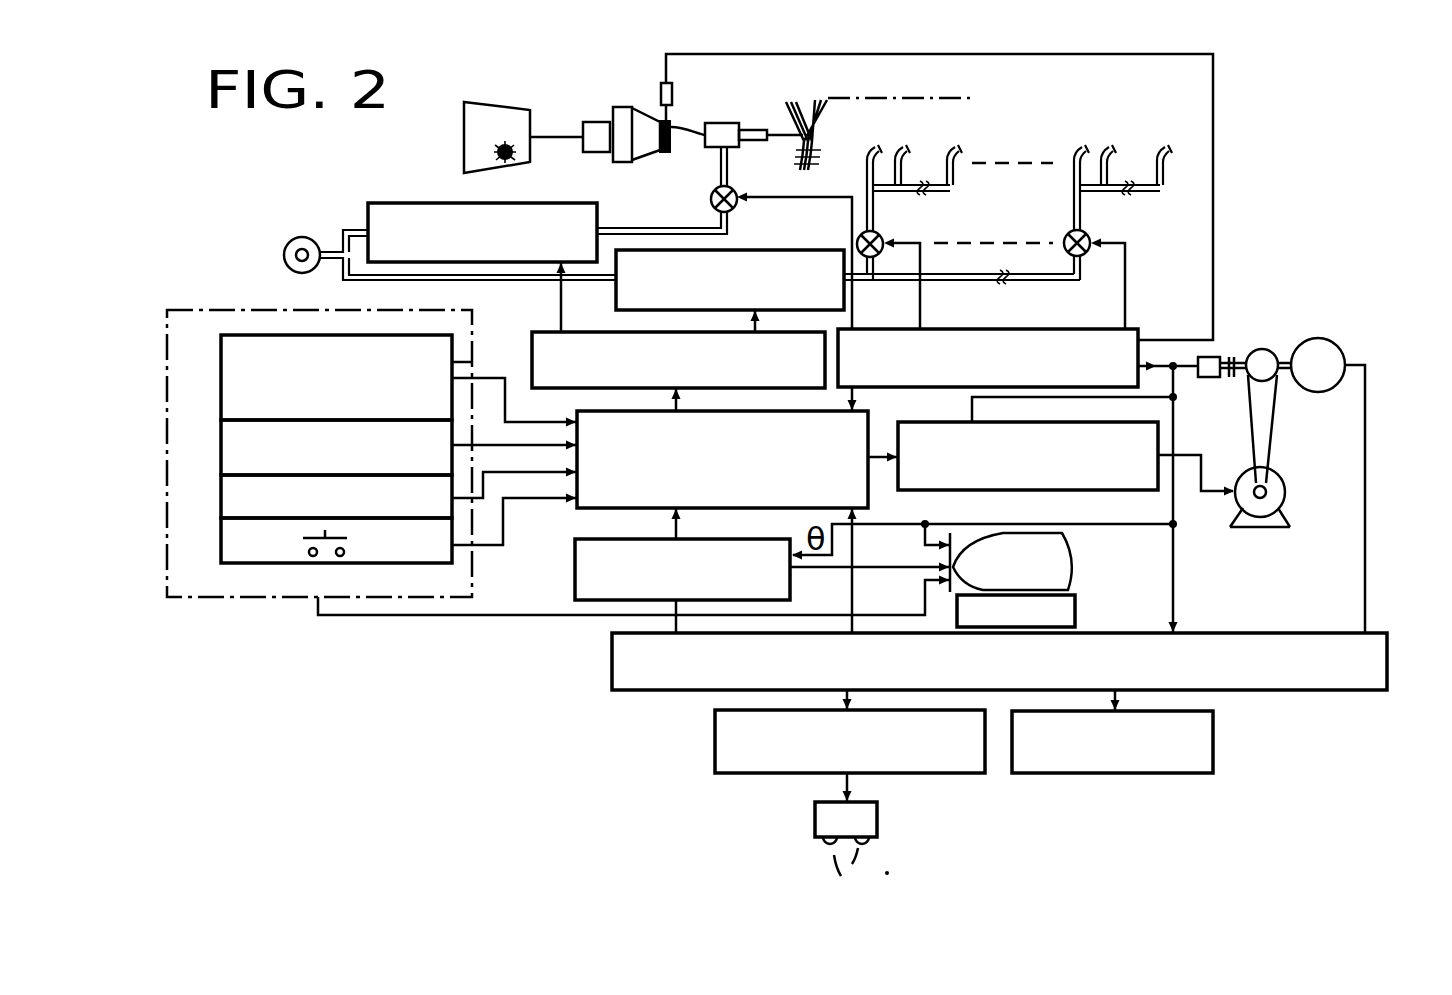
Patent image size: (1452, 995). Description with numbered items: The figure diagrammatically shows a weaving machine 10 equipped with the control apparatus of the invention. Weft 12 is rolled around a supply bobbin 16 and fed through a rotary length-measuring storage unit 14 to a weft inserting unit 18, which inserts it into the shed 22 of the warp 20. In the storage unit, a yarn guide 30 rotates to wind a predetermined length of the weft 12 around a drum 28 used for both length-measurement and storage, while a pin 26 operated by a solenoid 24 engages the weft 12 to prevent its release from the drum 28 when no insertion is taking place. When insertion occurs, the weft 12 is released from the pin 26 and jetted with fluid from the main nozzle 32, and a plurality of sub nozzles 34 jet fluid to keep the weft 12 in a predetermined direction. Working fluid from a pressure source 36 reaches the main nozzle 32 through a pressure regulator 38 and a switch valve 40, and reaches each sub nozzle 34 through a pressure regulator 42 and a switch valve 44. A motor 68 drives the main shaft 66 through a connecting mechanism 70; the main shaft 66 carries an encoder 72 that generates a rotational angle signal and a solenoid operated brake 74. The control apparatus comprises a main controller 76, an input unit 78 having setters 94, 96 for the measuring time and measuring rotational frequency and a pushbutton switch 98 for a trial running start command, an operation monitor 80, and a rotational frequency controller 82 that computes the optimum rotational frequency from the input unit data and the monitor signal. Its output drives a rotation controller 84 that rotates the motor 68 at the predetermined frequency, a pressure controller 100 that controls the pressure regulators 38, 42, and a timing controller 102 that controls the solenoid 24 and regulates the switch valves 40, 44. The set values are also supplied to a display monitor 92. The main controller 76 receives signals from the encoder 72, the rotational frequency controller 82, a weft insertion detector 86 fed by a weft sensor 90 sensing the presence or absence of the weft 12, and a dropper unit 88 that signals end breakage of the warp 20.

The weaving machine 10 is at (1213, 128).
The weft 12 is at (802, 169).
The rotary length-measuring storage unit 14 is at (587, 122).
The supply bobbin 16 is at (518, 103).
The weft inserting unit 18 is at (724, 122).
The warp 20 is at (828, 112).
The shed 22 is at (808, 100).
The solenoid 24 is at (672, 95).
The pin 26 is at (658, 120).
The drum 28 is at (646, 158).
The yarn guide 30 is at (617, 165).
The main nozzle 32 is at (752, 130).
The sub nozzles 34 is at (873, 151).
The pressure source 36 is at (301, 237).
The pressure regulator 38 is at (402, 203).
The switch valve 40 is at (733, 191).
The pressure regulator 42 is at (786, 250).
The switch valve 44 is at (881, 235).
The main shaft 66 is at (1258, 349).
The motor 68 is at (1280, 482).
The connecting mechanism 70 is at (1277, 422).
The encoder 72 is at (1208, 378).
The solenoid operated brake 74 is at (1310, 339).
The main controller 76 is at (612, 660).
The input unit 78 is at (248, 310).
The operation monitor 80 is at (575, 568).
The rotational frequency controller 82 is at (580, 509).
The rotation controller 84 is at (1100, 490).
The weft insertion detector 86 is at (715, 737).
The dropper unit 88 is at (1213, 742).
The weft sensor 90 is at (877, 820).
The display monitor 92 is at (1078, 566).
The setter 94 is at (480, 356).
The setter 96 is at (455, 435).
The pushbutton switch 98 is at (383, 563).
The pressure controller 100 is at (537, 332).
The timing controller 102 is at (1042, 330).